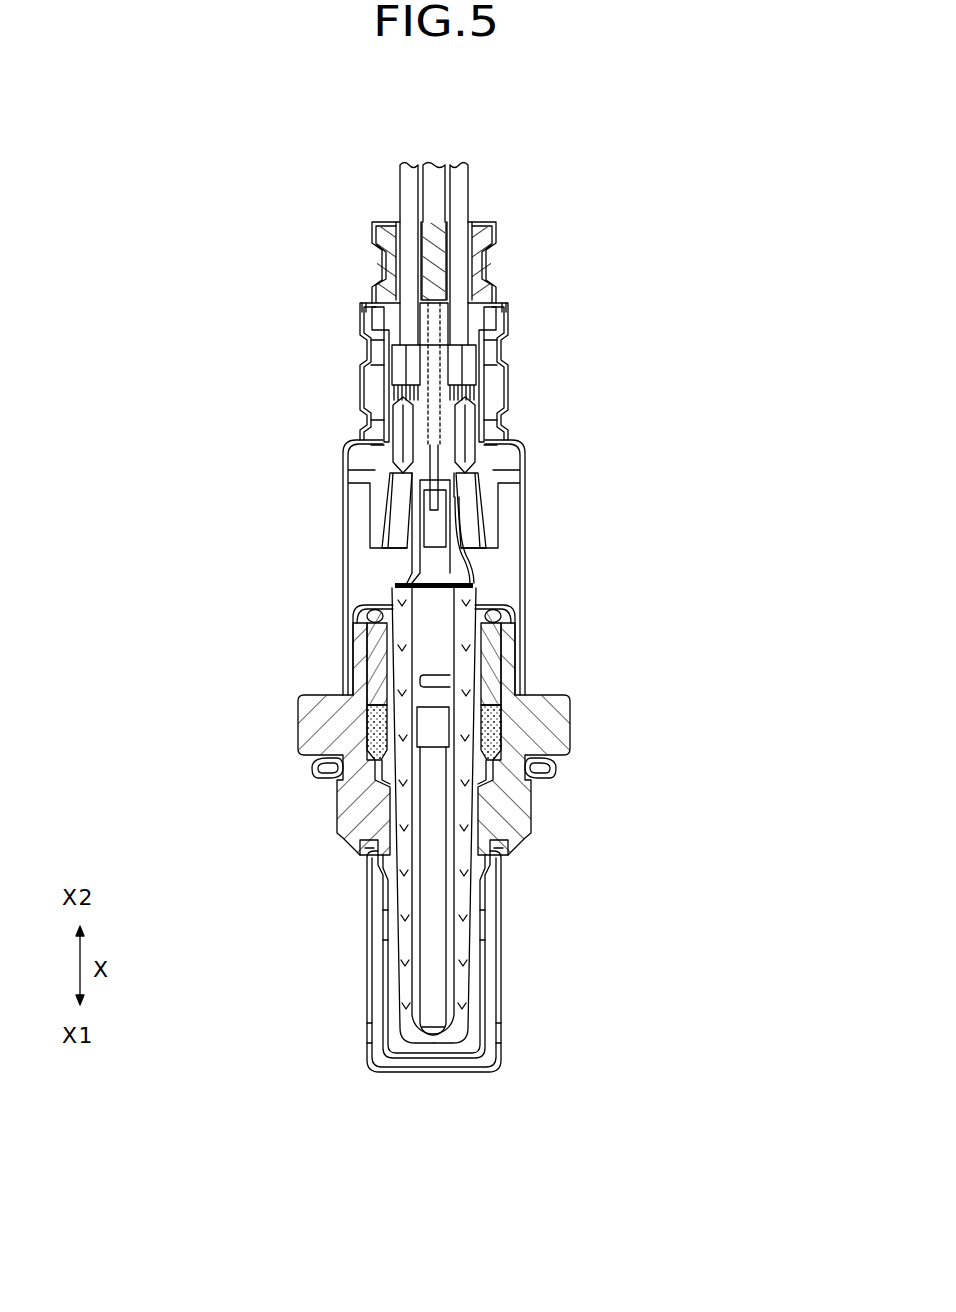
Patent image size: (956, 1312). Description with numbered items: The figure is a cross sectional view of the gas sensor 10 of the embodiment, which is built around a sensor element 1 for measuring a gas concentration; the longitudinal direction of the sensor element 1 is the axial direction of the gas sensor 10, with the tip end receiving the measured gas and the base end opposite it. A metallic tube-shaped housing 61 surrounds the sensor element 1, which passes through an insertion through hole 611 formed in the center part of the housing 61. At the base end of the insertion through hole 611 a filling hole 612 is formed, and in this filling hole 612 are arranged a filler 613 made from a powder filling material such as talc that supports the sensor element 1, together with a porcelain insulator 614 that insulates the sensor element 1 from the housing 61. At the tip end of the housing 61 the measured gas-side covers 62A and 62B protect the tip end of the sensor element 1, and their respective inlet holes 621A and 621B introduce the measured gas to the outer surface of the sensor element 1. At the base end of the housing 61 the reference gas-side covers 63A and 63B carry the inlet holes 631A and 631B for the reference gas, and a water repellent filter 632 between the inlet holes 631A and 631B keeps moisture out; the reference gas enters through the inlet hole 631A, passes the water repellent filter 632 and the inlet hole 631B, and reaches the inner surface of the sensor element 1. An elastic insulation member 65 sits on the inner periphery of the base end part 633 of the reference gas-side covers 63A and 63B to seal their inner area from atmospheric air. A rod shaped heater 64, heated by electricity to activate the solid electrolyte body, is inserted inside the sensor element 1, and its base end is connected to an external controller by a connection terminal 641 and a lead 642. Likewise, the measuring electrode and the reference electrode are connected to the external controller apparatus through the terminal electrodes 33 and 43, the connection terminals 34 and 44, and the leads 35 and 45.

The sensor element 1 is at (460, 879).
The gas sensor 10 is at (497, 201).
The terminal electrode 33 is at (470, 580).
The connection terminal 34 is at (510, 432).
The lead 35 is at (498, 305).
The terminal electrode 43 is at (410, 586).
The connection terminal 44 is at (372, 424).
The lead 45 is at (372, 292).
The housing 61 is at (528, 742).
The insertion through hole 611 is at (505, 808).
The filling hole 612 is at (490, 657).
The filler 613 is at (380, 742).
The porcelain insulator 614 is at (382, 672).
The measured gas-side cover 62A is at (505, 995).
The measured gas-side cover 62B is at (482, 1062).
The inlet hole 621A is at (368, 1030).
The inlet hole 621B is at (498, 927).
The reference gas-side cover 63A is at (525, 510).
The reference gas-side cover 63B is at (505, 342).
The inlet hole 631A is at (355, 378).
The inlet hole 631B is at (510, 378).
The water repellent filter 632 is at (366, 343).
The base end part 633 is at (372, 268).
The heater 64 is at (432, 958).
The connection terminal 641 is at (384, 462).
The lead 642 is at (428, 170).
The elastic insulation member 65 is at (496, 258).